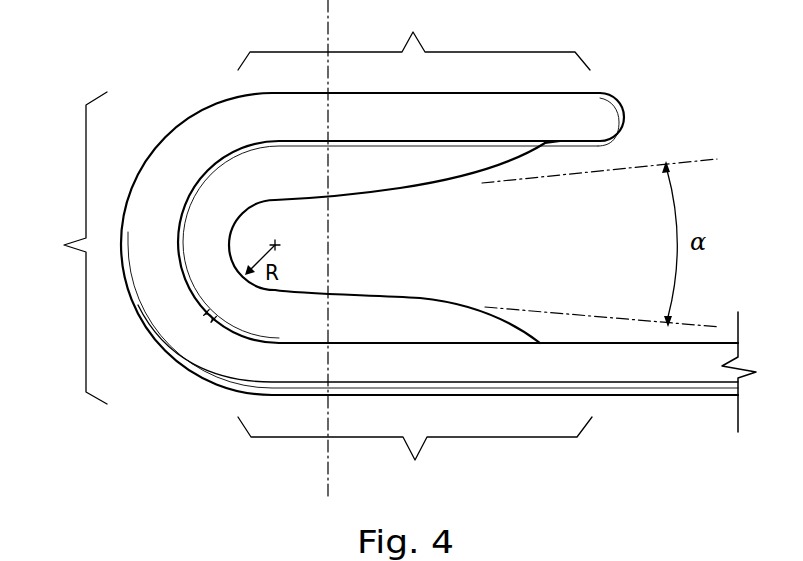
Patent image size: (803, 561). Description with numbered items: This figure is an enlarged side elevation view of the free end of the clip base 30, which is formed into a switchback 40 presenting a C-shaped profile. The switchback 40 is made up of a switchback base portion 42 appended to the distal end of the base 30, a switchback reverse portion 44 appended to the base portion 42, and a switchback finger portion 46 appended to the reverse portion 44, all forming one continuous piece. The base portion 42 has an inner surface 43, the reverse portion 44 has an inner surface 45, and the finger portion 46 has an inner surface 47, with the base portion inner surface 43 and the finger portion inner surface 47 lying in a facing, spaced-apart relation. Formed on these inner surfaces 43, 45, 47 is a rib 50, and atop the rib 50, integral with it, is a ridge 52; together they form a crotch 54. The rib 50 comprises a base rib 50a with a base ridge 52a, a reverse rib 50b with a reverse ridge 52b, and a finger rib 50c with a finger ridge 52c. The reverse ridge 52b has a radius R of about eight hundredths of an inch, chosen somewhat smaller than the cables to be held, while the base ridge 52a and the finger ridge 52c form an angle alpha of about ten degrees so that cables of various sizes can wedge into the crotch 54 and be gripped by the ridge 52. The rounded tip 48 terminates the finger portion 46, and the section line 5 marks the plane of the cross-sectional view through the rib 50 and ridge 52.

The section line 5 is at (350, 28).
The clip base 30 is at (690, 411).
The switchback 40 is at (170, 406).
The switchback base portion 42 is at (415, 457).
The switchback base portion inner surface 43 is at (552, 343).
The switchback reverse portion 44 is at (70, 248).
The switchback reverse portion inner surface 45 is at (214, 322).
The switchback finger portion 46 is at (414, 38).
The switchback finger portion inner surface 47 is at (567, 150).
The upper arm 48 is at (500, 93).
The rib 50 is at (435, 243).
The base rib 50a is at (384, 344).
The reverse rib 50b is at (197, 233).
The finger rib 50c is at (357, 148).
The ridge 52 is at (387, 243).
The base ridge 52a is at (350, 295).
The reverse ridge 52b is at (249, 207).
The finger ridge 52c is at (378, 193).
The crotch 54 is at (434, 242).